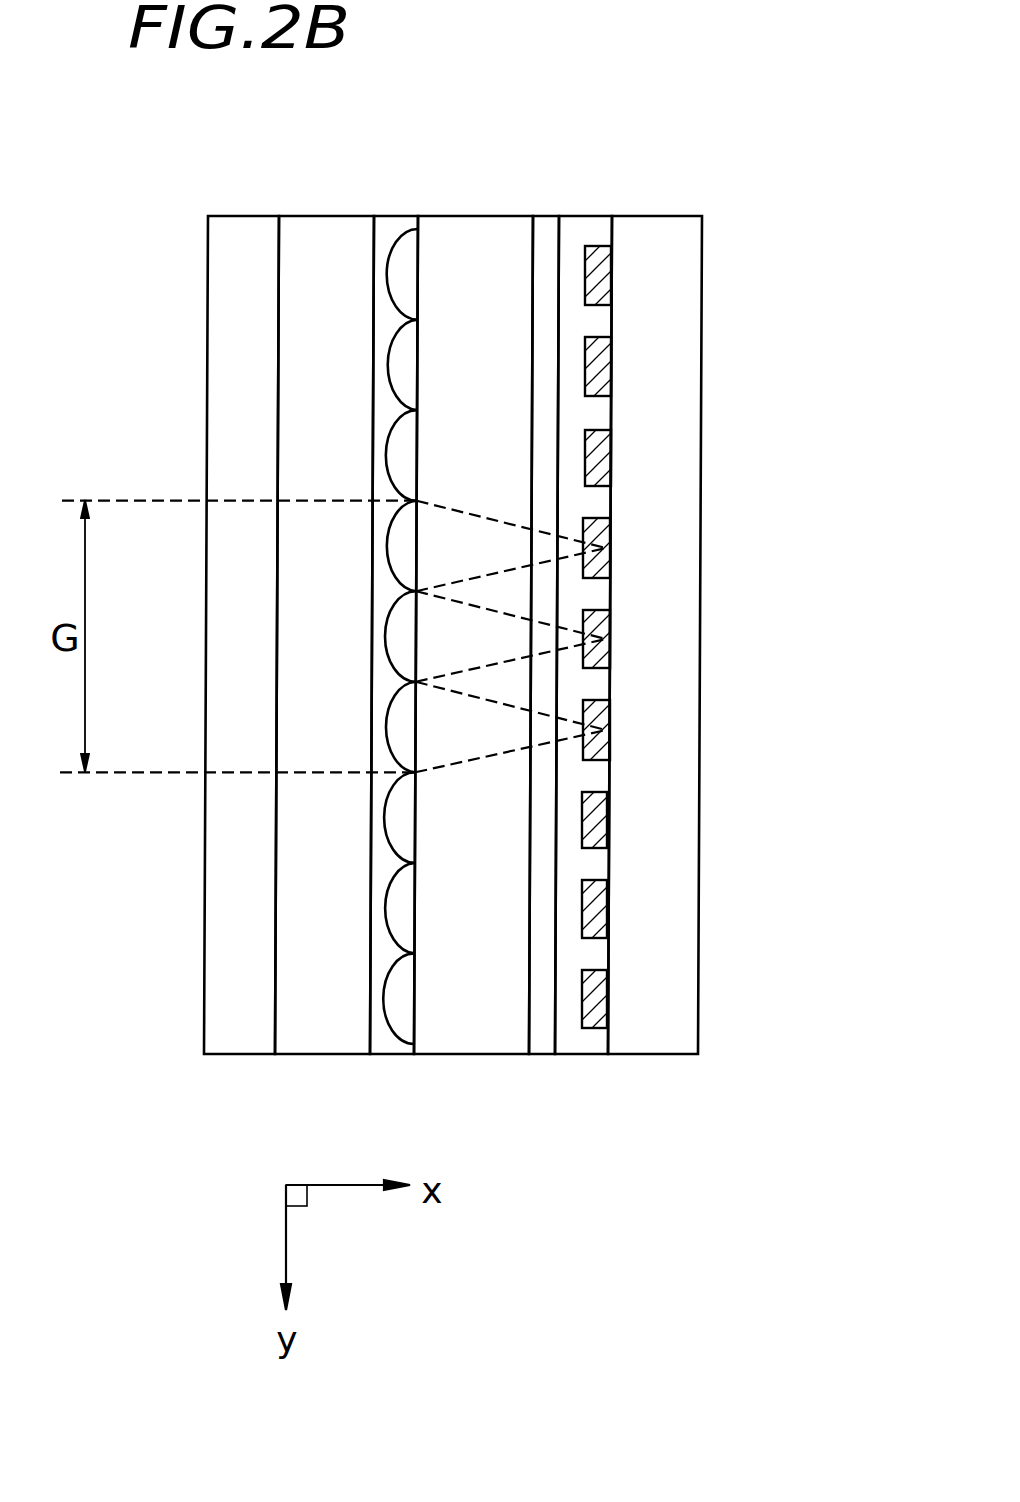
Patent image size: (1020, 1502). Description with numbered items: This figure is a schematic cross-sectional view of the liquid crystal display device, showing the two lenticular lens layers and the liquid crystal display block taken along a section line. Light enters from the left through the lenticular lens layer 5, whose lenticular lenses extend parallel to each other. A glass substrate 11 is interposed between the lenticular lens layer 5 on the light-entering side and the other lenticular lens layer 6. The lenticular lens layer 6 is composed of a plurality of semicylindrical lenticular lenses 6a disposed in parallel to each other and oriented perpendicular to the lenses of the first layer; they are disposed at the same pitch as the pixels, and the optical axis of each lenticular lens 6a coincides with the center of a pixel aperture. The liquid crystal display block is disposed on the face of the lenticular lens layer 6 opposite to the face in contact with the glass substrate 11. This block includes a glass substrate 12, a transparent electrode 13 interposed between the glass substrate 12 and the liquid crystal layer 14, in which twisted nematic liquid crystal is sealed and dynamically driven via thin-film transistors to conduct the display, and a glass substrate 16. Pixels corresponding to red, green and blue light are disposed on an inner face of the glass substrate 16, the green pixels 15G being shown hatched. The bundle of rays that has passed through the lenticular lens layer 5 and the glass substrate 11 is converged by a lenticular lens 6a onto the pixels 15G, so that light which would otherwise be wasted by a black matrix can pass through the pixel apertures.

The lenticular lens layer 5 is at (208, 240).
The glass substrate 11 is at (320, 216).
The lenticular lens layer 6 is at (397, 216).
The lenticular lens 6a is at (407, 250).
The glass substrate 12 is at (467, 216).
The transparent electrode 13 is at (544, 216).
The liquid crystal layer 14 is at (583, 216).
The pixels 15G is at (611, 272).
The glass substrate 16 is at (683, 216).